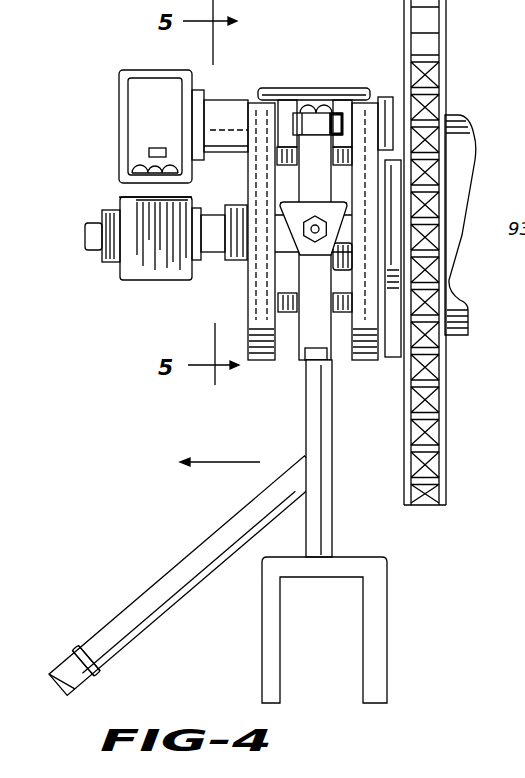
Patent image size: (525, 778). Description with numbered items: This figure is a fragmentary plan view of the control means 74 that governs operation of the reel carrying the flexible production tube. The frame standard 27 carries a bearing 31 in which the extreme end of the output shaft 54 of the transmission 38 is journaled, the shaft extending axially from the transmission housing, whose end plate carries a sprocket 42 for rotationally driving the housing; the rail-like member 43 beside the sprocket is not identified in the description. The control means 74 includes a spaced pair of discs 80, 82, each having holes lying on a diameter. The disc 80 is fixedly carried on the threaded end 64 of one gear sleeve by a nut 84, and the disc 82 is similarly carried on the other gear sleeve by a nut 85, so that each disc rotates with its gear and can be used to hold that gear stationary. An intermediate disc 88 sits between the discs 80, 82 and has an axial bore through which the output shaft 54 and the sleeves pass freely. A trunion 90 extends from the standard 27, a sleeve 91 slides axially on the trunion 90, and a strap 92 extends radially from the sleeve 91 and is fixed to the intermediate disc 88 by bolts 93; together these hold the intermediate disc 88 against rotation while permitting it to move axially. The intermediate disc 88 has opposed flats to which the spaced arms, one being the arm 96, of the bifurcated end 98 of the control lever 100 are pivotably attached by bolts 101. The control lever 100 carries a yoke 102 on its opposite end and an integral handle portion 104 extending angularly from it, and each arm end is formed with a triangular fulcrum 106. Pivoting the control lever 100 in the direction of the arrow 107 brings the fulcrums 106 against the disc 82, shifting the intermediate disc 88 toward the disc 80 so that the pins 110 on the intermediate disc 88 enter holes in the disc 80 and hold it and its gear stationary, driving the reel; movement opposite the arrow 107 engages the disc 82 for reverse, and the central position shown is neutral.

The standard 27 is at (149, 75).
The bearing 31 is at (152, 270).
The transmission 38 is at (488, 125).
The sprocket 42 is at (432, 112).
The rail 43 is at (447, 18).
The output shaft 54 is at (85, 237).
The threaded end 64 is at (207, 262).
The control means 74 is at (342, 52).
The disc 80 is at (262, 361).
The disc 82 is at (372, 361).
The nut 84 is at (247, 205).
The nut 85 is at (347, 262).
The intermediate disc 88 is at (327, 184).
The trunion 90 is at (243, 105).
The sleeve 91 is at (292, 100).
The strap 92 is at (340, 110).
The bolts 93 is at (312, 105).
The arm 96 is at (329, 306).
The bifurcated end 98 is at (294, 361).
The control lever 100 is at (295, 418).
The bolts 101 is at (275, 276).
The yoke 102 is at (383, 632).
The handle portion 104 is at (118, 612).
The fulcrum 106 is at (280, 203).
The arrow 107 is at (258, 452).
The pins 110 is at (282, 145).